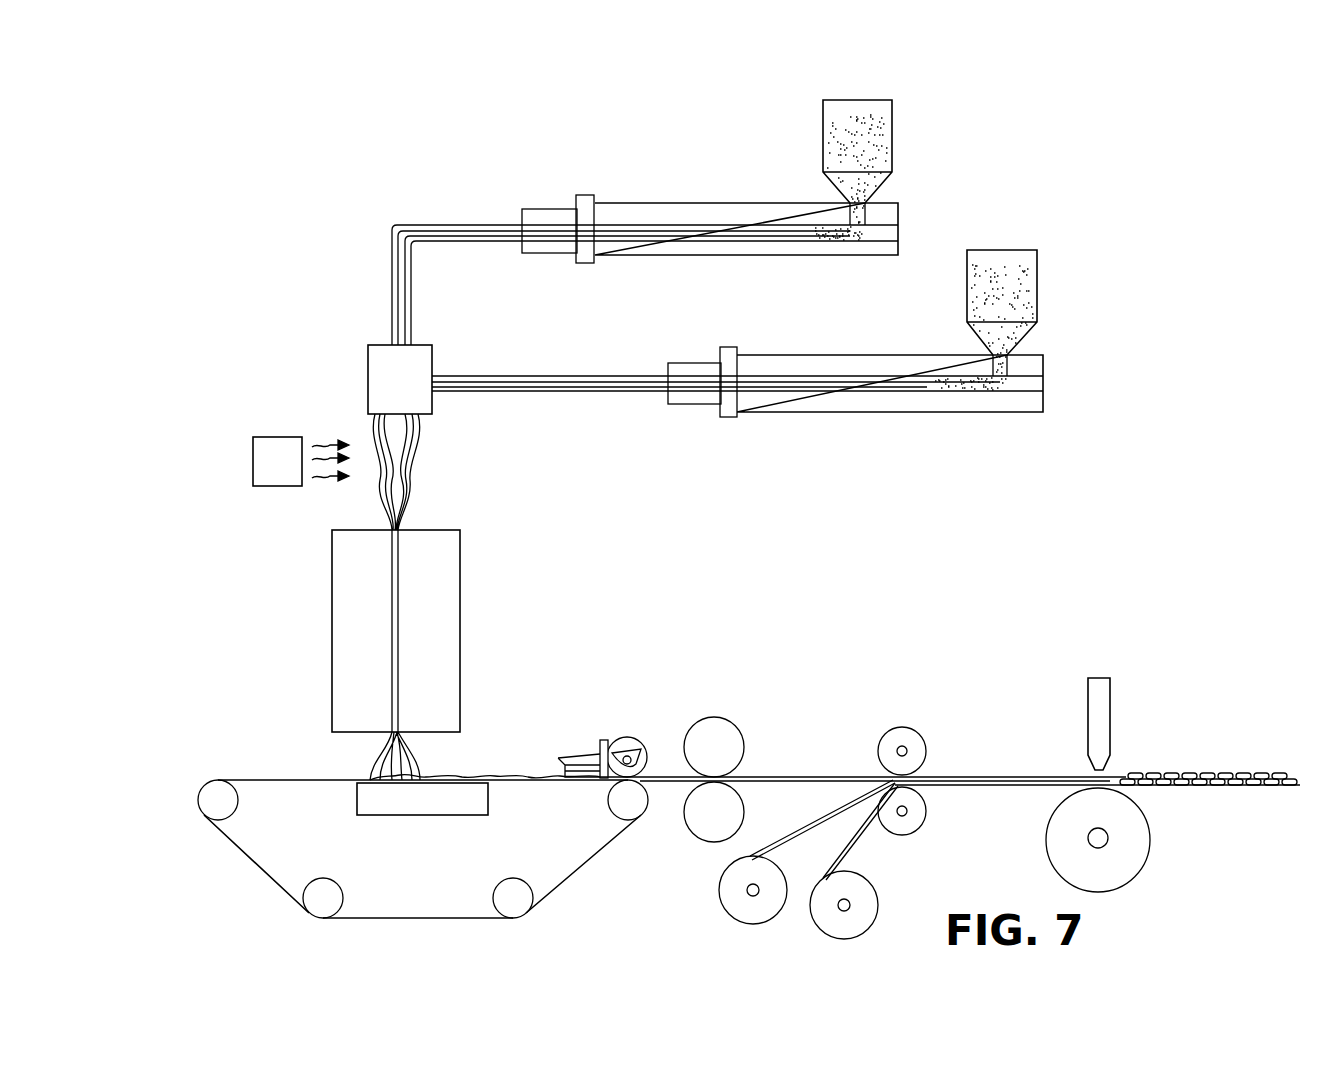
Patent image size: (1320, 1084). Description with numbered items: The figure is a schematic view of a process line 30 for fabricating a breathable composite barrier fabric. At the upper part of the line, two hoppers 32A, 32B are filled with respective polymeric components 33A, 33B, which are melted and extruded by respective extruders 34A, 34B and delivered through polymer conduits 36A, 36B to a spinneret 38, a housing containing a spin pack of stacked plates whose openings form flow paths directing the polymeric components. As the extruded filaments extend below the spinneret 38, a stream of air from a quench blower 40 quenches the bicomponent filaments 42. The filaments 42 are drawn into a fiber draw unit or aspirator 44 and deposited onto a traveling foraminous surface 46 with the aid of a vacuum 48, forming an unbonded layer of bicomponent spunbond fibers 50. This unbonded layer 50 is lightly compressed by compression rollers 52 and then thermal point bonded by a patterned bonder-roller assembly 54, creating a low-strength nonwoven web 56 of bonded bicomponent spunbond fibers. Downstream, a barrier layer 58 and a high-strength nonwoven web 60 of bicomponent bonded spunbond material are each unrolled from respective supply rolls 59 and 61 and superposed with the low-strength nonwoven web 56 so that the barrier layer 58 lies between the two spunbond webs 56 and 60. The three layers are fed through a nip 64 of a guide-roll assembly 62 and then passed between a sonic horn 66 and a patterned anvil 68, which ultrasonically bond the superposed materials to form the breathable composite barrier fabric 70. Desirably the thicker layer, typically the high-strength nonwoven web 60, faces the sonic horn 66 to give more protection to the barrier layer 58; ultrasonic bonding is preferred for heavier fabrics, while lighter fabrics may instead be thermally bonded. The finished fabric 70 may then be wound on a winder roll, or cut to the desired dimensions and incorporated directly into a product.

The process line 30 is at (224, 238).
The hopper 32A is at (1000, 250).
The hopper 32B is at (890, 100).
The polymeric component 33A is at (1020, 302).
The polymeric component 33B is at (875, 152).
The extruder 34A is at (765, 354).
The extruder 34B is at (622, 204).
The polymer conduit 36A is at (487, 375).
The polymer conduit 36B is at (430, 224).
The spinneret 38 is at (368, 371).
The quench blower 40 is at (270, 440).
The bicomponent filaments 42 is at (412, 462).
The fiber draw unit or aspirator 44 is at (460, 531).
The foraminous surface 46 is at (503, 926).
The vacuum 48 is at (470, 816).
The unbonded layer of bicomponent spunbond fibers 50 is at (498, 778).
The compression rollers 52 is at (630, 737).
The patterned bonder-roller assembly 54 is at (697, 717).
The low-strength nonwoven web 56 is at (773, 776).
The barrier layer 58 is at (816, 823).
The supply roll 59 is at (720, 889).
The high-strength nonwoven web 60 is at (858, 833).
The supply roll 61 is at (878, 885).
The guide-roll assembly 62 is at (900, 735).
The nip 64 is at (927, 769).
The sonic horn 66 is at (1105, 710).
The patterned anvil 68 is at (1117, 880).
The breathable composite barrier fabric 70 is at (1216, 773).